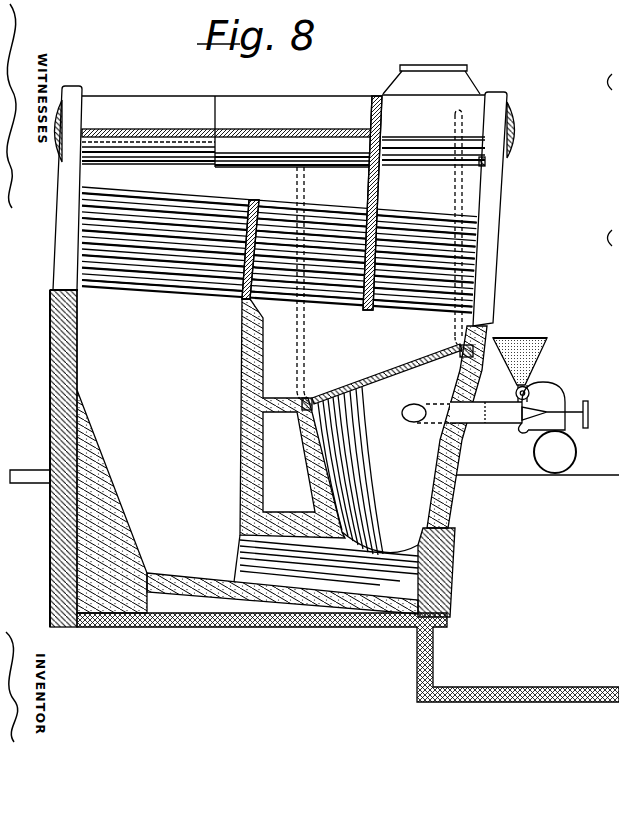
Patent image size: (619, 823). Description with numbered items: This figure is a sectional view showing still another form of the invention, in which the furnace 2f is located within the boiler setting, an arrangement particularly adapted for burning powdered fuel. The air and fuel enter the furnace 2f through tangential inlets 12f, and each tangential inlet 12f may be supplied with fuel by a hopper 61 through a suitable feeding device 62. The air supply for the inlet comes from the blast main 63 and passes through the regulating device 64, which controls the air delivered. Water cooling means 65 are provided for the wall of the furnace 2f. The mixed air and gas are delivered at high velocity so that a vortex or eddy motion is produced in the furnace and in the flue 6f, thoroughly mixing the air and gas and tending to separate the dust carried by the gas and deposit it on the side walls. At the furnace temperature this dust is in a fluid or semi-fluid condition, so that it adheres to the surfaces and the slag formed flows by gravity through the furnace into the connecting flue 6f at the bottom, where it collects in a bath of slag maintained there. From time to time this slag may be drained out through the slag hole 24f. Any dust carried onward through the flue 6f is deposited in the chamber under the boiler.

The hopper 61 is at (540, 352).
The feeding device 62 is at (530, 386).
The blast main 63 is at (566, 455).
The regulating device 64 is at (548, 410).
The water cooling means 65 is at (461, 357).
The tangential inlet 12f is at (410, 421).
The furnace 2f is at (368, 471).
The flue 6f is at (282, 573).
The slag hole 24f is at (420, 589).